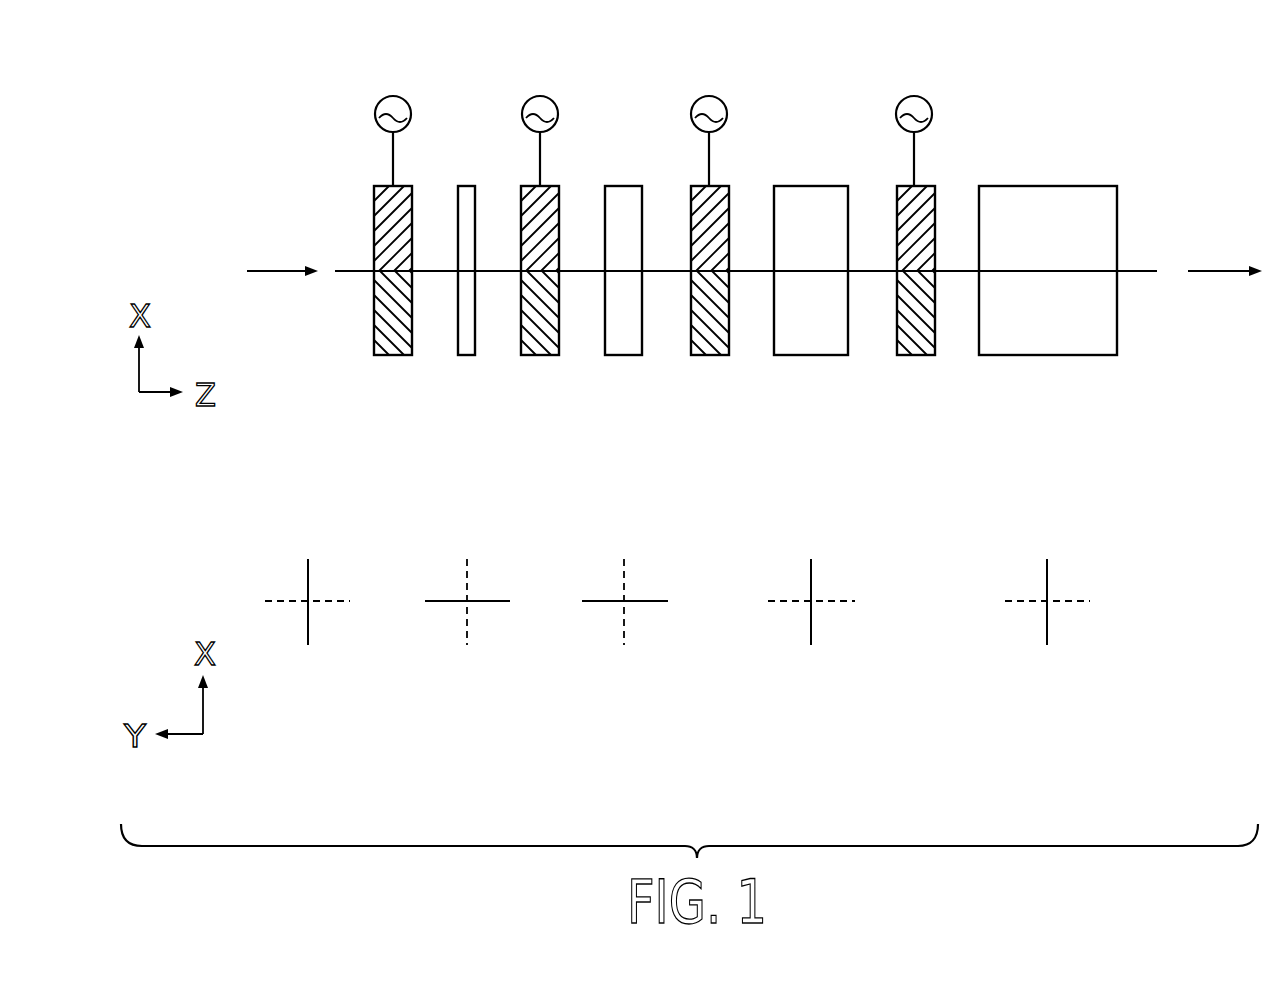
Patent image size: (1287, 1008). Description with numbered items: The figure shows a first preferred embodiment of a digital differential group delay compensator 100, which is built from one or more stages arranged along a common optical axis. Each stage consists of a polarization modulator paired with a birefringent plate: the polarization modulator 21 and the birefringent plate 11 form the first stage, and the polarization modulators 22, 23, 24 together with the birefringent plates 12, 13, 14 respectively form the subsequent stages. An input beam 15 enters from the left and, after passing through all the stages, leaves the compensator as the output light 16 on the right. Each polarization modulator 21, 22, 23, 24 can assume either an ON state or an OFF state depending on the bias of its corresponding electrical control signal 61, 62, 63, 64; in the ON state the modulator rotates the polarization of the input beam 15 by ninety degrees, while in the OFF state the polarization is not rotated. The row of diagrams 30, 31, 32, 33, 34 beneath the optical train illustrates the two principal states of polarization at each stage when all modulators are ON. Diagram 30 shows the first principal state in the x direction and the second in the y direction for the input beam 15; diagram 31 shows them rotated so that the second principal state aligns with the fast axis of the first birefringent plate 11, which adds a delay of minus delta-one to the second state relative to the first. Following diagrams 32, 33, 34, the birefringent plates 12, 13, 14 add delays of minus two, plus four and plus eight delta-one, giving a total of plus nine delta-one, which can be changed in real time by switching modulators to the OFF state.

The birefringent plate 11 is at (460, 186).
The birefringent plate 12 is at (622, 186).
The birefringent plate 13 is at (808, 186).
The birefringent plate 14 is at (1043, 186).
The input beam 15 is at (270, 271).
The output light 16 is at (1215, 271).
The polarization modulator 21 is at (393, 355).
The polarization modulator 22 is at (540, 355).
The polarization modulator 23 is at (710, 355).
The polarization modulator 24 is at (916, 355).
The diagram 30 is at (293, 649).
The diagram 31 is at (453, 649).
The diagram 32 is at (609, 649).
The diagram 33 is at (796, 649).
The diagram 34 is at (1033, 649).
The electrical control signal 61 is at (382, 98).
The electrical control signal 62 is at (529, 98).
The electrical control signal 63 is at (698, 98).
The electrical control signal 64 is at (903, 98).
The digital DGD compensator 100 is at (720, 807).